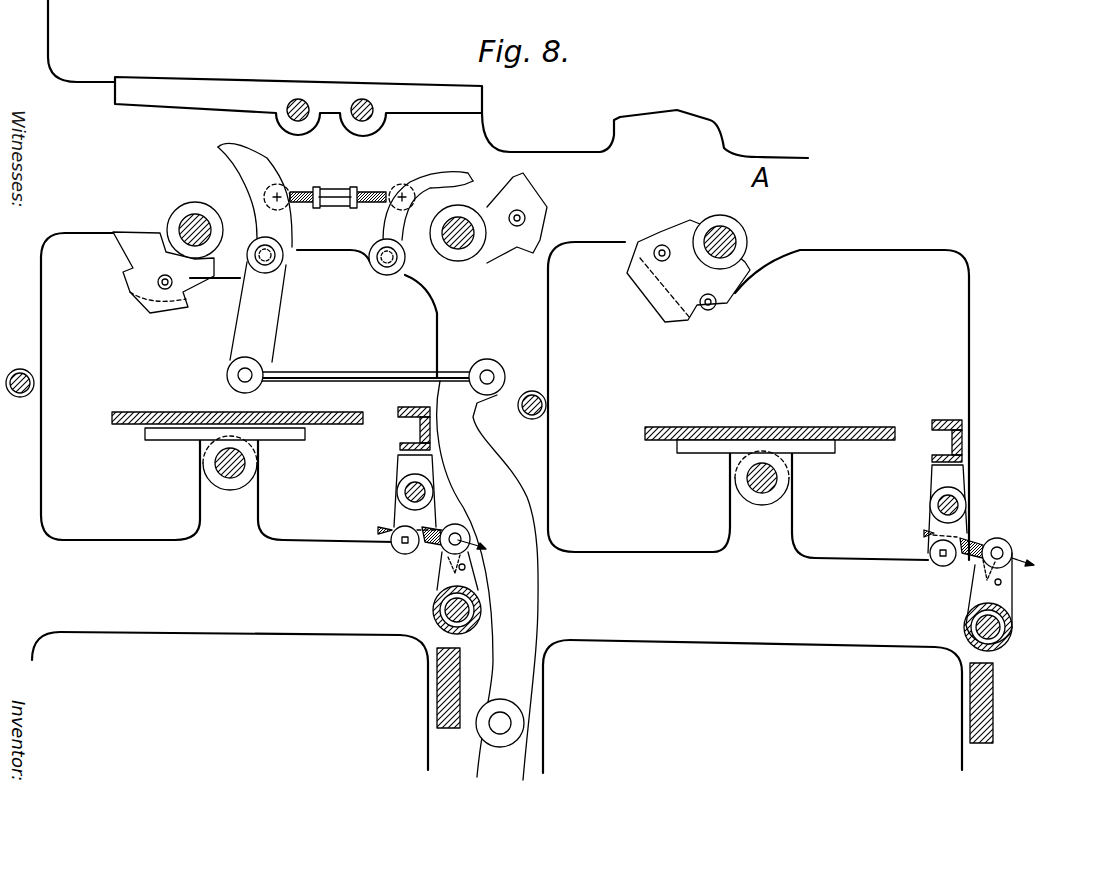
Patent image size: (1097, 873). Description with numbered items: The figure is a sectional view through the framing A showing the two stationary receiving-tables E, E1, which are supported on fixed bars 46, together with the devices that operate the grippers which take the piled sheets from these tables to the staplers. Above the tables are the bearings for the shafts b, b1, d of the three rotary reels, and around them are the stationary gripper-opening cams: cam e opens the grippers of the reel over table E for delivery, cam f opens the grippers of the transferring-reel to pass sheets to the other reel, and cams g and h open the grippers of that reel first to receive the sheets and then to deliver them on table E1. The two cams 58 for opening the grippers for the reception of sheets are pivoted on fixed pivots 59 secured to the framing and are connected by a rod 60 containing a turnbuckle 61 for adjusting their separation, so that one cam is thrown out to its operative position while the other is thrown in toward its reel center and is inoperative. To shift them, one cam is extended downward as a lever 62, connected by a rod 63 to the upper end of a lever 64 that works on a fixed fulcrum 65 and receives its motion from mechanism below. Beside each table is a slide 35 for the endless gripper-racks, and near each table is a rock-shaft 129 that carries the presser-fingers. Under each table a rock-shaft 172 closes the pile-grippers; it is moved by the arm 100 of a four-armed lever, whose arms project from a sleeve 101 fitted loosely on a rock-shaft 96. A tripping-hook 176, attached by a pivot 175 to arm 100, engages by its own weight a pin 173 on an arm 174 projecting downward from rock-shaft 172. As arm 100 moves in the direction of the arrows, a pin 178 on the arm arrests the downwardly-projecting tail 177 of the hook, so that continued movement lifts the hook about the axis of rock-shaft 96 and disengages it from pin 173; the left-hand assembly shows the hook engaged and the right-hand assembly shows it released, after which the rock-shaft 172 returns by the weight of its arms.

The slides 35 is at (398, 446).
The fixed bars 46 is at (247, 478).
The cam 58 is at (282, 171).
The fixed pivots 59 is at (277, 263).
The rod 60 is at (363, 207).
The turnbuckle 61 is at (347, 193).
The lever 62 is at (258, 312).
The rod 63 is at (347, 372).
The lever 64 is at (487, 580).
The fixed fulcrum 65 is at (512, 723).
The rock-shafts 96 is at (440, 630).
The lever-arm 100 is at (437, 587).
The sleeve 101 is at (440, 610).
The rock-shaft 129 is at (32, 375).
The rock-shaft 172 is at (427, 492).
The pin 173 is at (395, 545).
The arm 174 is at (400, 513).
The pivot 175 is at (470, 539).
The tripping-hook 176 is at (390, 532).
The tail 177 is at (448, 567).
The pin 178 is at (465, 567).
The framing A is at (155, 596).
The table E is at (237, 415).
The table E1 is at (770, 425).
The shaft b is at (180, 218).
The shaft b1 is at (740, 235).
The shaft d is at (458, 253).
The stationary cam e is at (173, 307).
The stationary cam f is at (547, 213).
The stationary cam g is at (635, 270).
The stationary cam h is at (709, 312).